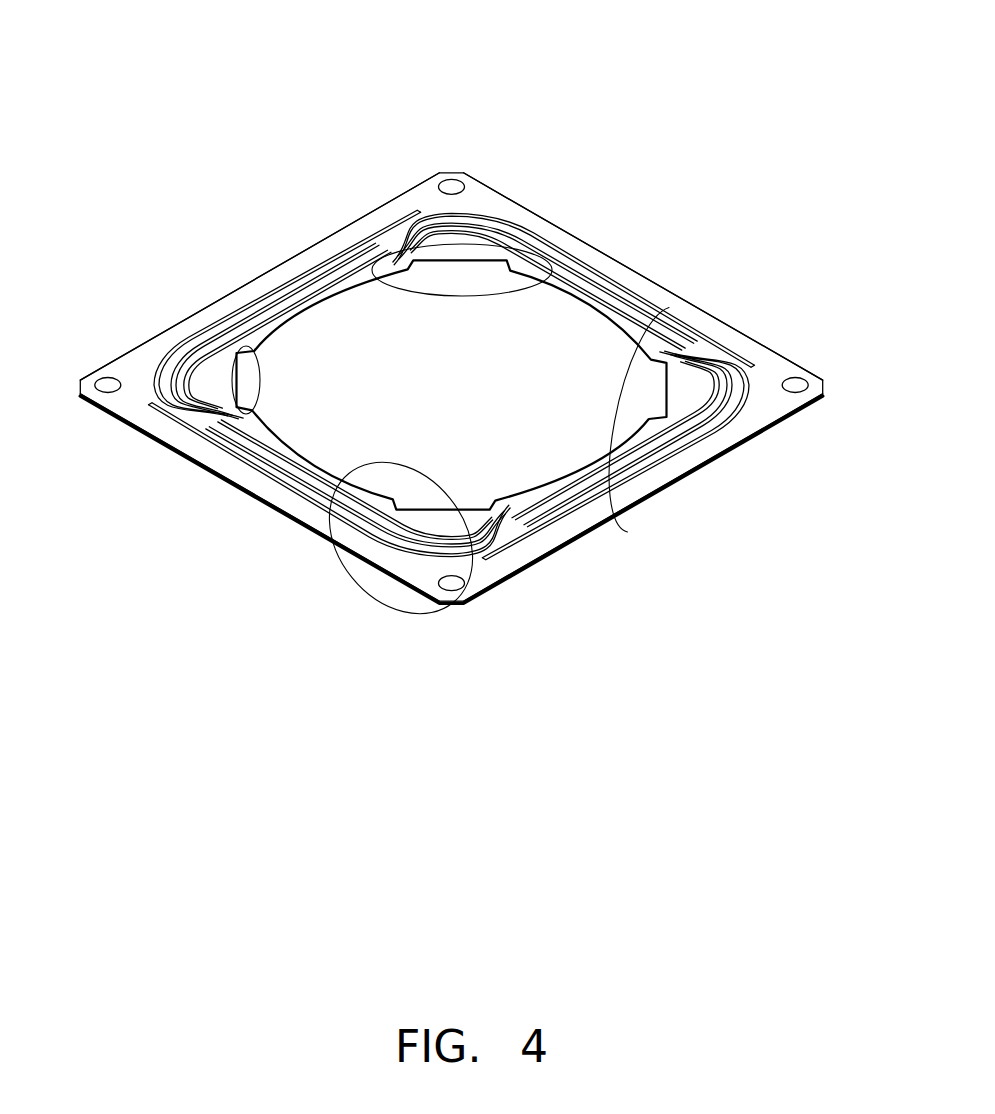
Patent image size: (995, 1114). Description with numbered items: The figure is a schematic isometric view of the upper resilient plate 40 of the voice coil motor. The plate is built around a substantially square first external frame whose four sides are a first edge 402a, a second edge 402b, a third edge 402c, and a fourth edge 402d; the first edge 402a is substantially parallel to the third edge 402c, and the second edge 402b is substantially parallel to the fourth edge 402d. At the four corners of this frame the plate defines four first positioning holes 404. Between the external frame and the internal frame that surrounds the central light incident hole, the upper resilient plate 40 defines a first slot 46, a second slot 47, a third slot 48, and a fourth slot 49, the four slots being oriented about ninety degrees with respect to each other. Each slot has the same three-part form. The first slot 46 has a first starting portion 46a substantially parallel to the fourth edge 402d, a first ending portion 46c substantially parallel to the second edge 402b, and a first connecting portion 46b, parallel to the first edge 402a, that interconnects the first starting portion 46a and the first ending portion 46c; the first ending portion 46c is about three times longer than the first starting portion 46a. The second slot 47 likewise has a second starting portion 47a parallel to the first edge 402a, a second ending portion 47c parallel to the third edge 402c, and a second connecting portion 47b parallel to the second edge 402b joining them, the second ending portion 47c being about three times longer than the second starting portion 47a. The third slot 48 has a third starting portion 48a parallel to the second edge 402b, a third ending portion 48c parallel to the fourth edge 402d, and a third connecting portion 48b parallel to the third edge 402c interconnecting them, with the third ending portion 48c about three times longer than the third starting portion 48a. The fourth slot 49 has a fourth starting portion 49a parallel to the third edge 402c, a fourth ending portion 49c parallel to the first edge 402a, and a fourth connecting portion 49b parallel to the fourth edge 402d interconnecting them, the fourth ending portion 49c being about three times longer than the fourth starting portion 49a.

The upper resilient plate 40 is at (301, 56).
The first positioning holes 404 is at (448, 182).
The first edge 402a is at (487, 187).
The second edge 402b is at (770, 425).
The third edge 402c is at (138, 428).
The fourth edge 402d is at (157, 333).
The first slot 46 is at (580, 347).
The first starting portion 46a is at (547, 267).
The first connecting portion 46b is at (600, 280).
The first ending portion 46c is at (640, 330).
The second slot 47 is at (524, 496).
The second starting portion 47a is at (621, 442).
The second connecting portion 47b is at (596, 505).
The second ending portion 47c is at (446, 607).
The third slot 48 is at (317, 477).
The third starting portion 48a is at (355, 504).
The third connecting portion 48b is at (275, 478).
The third ending portion 48c is at (210, 463).
The fourth slot 49 is at (347, 290).
The fourth starting portion 49a is at (273, 333).
The fourth connecting portion 49b is at (290, 297).
The fourth ending portion 49c is at (367, 267).